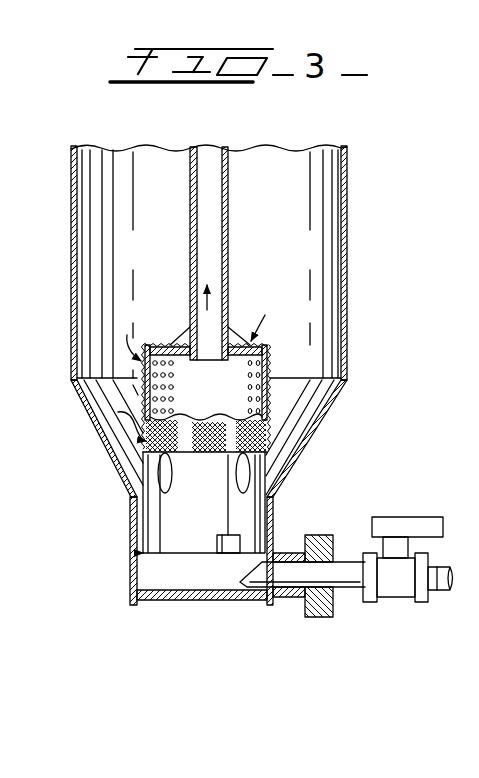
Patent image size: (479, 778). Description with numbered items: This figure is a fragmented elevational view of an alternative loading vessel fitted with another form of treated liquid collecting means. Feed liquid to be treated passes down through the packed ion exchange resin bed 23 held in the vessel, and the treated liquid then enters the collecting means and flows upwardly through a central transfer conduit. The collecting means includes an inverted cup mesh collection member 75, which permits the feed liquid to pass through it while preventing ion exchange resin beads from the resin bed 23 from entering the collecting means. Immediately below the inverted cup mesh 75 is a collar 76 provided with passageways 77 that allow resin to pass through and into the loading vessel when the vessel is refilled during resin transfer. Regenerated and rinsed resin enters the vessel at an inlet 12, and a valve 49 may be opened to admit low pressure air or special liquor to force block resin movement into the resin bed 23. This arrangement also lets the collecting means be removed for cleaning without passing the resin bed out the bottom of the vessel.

The ion exchange resin bed 23 is at (210, 322).
The inverted cup mesh collection member 75 is at (270, 360).
The passageways 77 is at (162, 477).
The collar 76 is at (160, 521).
The inlet 12 is at (247, 565).
The valve 49 is at (398, 527).